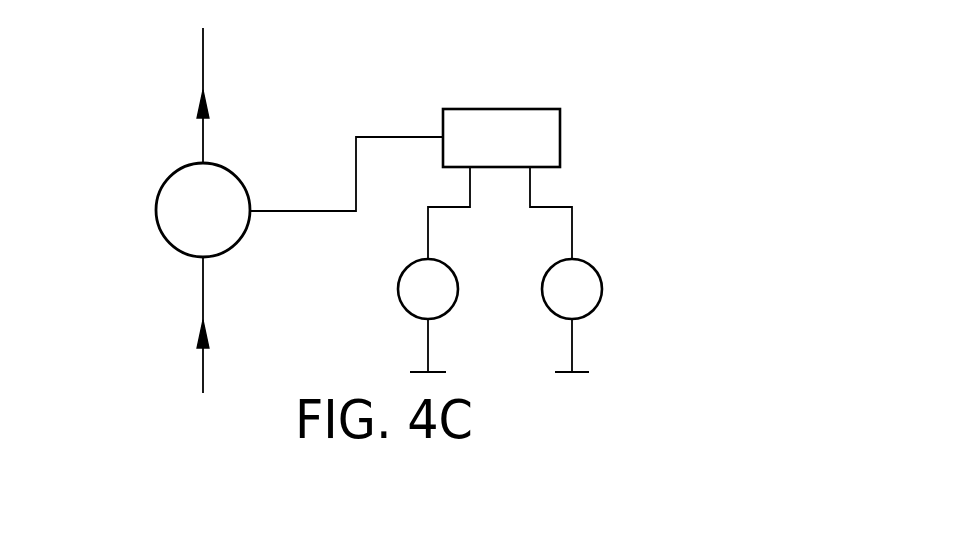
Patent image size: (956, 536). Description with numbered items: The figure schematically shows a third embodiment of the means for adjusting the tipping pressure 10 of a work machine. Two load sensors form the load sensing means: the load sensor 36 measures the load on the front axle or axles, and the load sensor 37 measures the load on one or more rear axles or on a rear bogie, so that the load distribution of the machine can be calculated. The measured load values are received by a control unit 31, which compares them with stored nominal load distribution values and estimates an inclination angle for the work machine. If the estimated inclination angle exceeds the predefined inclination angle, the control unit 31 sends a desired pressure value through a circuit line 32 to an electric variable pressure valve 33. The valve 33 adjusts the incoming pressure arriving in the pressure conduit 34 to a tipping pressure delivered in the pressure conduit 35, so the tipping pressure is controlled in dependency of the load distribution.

The means for adjusting the tipping pressure 10 is at (533, 90).
The control unit 31 is at (560, 137).
The circuit line 32 is at (291, 212).
The electric variable pressure valve 33 is at (155, 210).
The pressure conduit 34 is at (203, 368).
The pressure conduit 35 is at (203, 63).
The load sensor 36 is at (400, 300).
The load sensor 37 is at (600, 305).